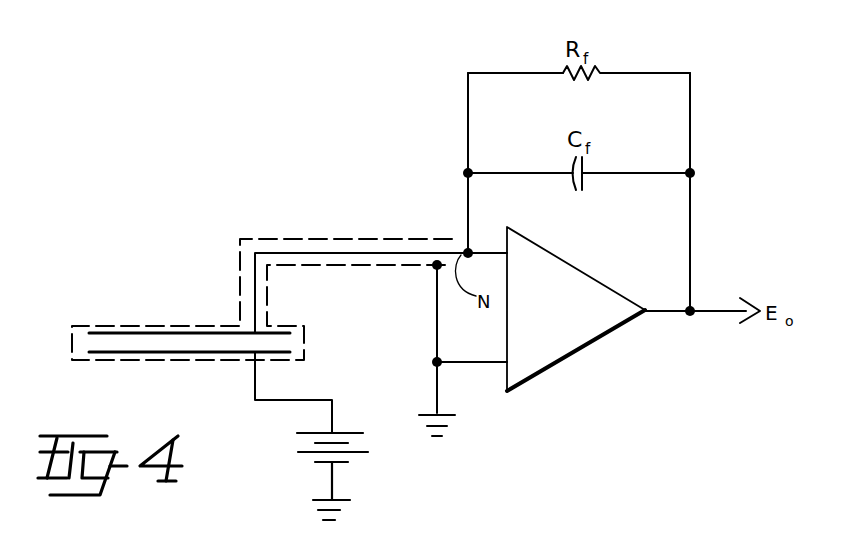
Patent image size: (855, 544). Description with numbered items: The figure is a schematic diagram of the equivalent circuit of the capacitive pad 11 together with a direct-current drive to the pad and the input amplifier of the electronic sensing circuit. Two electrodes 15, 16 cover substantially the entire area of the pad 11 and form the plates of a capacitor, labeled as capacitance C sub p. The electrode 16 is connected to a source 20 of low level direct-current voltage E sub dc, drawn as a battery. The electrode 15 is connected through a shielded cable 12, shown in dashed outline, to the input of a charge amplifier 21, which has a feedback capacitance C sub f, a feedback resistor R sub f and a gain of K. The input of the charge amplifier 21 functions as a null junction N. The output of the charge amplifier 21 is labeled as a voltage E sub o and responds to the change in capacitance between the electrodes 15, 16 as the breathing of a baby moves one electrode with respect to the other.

The pad 11 is at (171, 346).
The cable 12 is at (281, 237).
The electrode 15 is at (115, 333).
The electrode 16 is at (114, 352).
The source of low level D.C. voltage 20 is at (308, 463).
The charge amplifier 21 is at (563, 345).